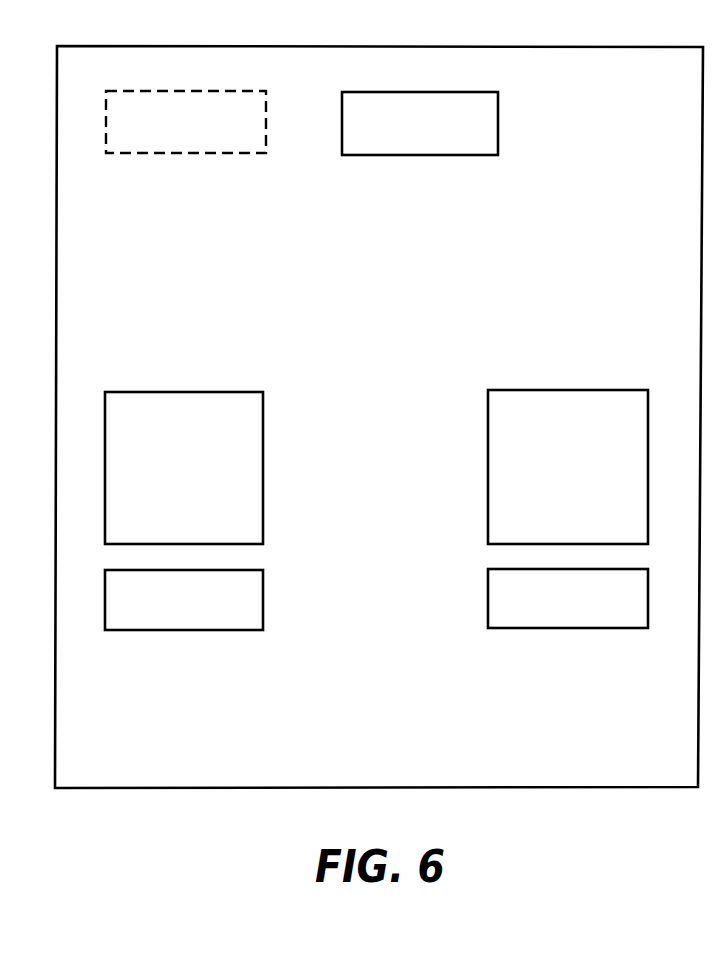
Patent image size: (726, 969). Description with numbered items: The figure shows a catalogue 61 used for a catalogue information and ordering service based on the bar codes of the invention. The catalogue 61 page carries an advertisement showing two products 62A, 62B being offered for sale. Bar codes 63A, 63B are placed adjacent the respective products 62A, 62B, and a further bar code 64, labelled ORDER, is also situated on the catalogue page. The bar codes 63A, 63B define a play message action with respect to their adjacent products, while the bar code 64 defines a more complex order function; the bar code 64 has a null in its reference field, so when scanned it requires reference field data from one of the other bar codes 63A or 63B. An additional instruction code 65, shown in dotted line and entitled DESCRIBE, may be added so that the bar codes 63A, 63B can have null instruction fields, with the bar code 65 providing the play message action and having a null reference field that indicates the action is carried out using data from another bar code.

The catalogue 61 is at (624, 779).
The product 62A is at (263, 470).
The product 62B is at (500, 470).
The bar code 63A is at (263, 603).
The bar code 63B is at (490, 598).
The order bar code 64 is at (497, 122).
The instruction code 65 is at (258, 131).